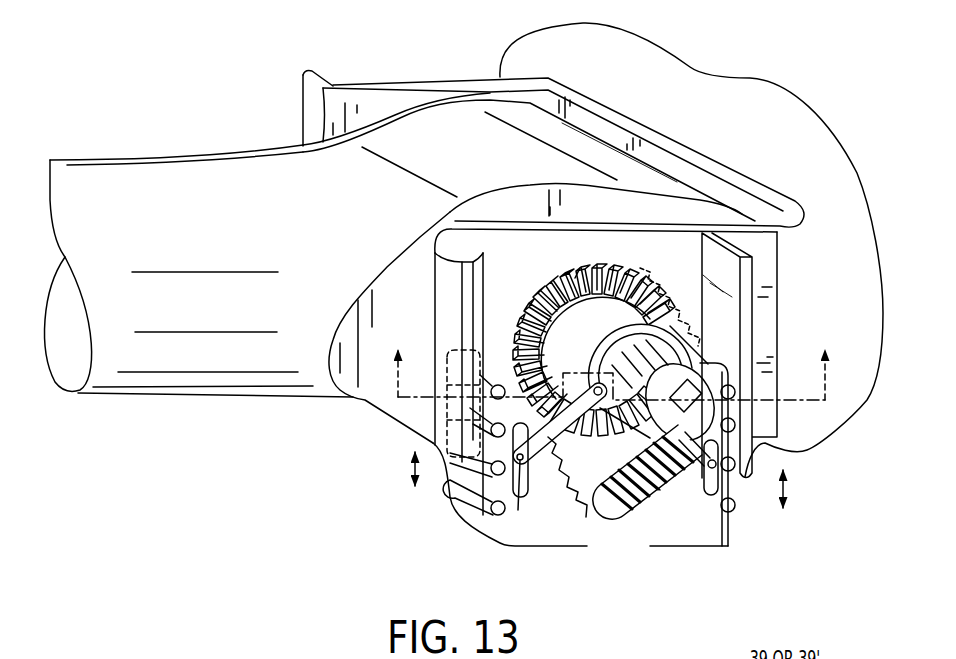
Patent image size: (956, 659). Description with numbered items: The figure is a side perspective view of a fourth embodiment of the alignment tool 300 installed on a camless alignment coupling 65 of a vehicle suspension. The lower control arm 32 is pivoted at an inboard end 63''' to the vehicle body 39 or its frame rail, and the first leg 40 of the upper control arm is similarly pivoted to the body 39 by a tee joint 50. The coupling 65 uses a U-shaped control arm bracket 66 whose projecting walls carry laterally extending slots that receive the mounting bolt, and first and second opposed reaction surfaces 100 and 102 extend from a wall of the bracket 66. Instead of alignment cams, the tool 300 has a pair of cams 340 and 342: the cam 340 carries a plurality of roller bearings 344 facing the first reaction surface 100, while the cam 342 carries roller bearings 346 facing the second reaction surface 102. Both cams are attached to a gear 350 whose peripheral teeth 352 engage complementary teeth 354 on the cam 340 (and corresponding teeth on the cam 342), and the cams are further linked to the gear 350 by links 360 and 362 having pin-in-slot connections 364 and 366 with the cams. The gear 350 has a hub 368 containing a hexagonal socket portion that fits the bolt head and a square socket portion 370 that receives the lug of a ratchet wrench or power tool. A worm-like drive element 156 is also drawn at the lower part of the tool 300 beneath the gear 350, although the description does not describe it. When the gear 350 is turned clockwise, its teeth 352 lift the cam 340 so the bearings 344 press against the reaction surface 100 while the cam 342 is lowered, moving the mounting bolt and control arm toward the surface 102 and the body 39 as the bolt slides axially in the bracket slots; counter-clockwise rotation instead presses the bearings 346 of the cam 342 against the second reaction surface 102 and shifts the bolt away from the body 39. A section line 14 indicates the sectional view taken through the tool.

The first leg 40 is at (175, 168).
The lower control arm 32 is at (173, 366).
The tee joint 50 is at (473, 104).
The U-shaped control arm bracket 66 is at (590, 96).
The camless alignment coupling 65 is at (722, 162).
The vehicle body 39 is at (735, 103).
The first reaction surface 100 is at (478, 240).
The cam 340 is at (532, 547).
The roller bearings 344 is at (434, 442).
The tool 300 is at (583, 340).
The peripheral teeth 352 is at (553, 322).
The gear 350 is at (574, 278).
The hub 368 is at (630, 325).
The square socket portion 370 is at (692, 386).
The inboard end 63''' is at (670, 302).
The link 360 is at (560, 445).
The complementary teeth 354 is at (575, 490).
The link 362 is at (657, 517).
The worm 156 is at (622, 516).
The pin-in-slot connection 364 is at (703, 483).
The cam 342 is at (716, 535).
The roller bearings 346 is at (736, 508).
The pin-in-slot connection 366 is at (725, 470).
The second reaction surface 102 is at (733, 278).
The section line 14- 14 is at (611, 352).